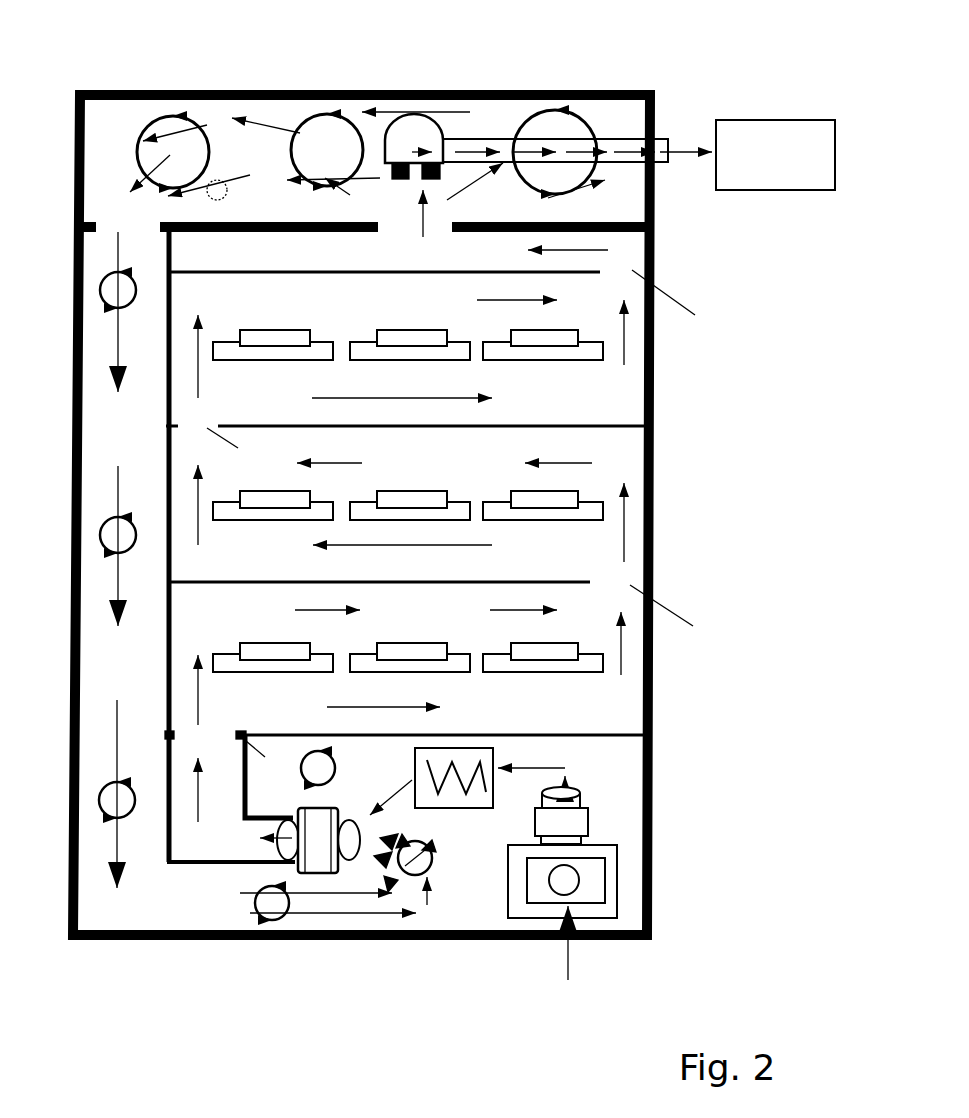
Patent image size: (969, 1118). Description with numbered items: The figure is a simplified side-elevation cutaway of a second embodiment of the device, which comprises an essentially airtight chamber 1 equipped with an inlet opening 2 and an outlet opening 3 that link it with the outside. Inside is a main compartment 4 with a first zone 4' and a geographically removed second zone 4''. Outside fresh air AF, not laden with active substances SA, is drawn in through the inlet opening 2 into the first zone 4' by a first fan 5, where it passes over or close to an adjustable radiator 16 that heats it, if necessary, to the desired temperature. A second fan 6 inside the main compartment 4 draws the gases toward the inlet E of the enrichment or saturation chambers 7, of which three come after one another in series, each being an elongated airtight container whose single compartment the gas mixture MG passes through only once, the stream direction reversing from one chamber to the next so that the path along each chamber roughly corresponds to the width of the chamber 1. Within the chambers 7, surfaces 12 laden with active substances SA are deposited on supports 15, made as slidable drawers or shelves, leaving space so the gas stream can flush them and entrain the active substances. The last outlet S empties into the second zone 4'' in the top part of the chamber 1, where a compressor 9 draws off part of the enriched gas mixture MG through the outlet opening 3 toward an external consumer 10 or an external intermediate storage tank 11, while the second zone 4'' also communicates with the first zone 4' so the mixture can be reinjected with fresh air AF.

The chamber 1 is at (163, 88).
The inlet opening 2 is at (580, 881).
The outlet opening 3 is at (673, 133).
The main compartment 4 is at (120, 560).
The first zone 4' is at (430, 869).
The second zone 4'' is at (367, 155).
The first fan 5 is at (592, 821).
The second fan 6 is at (318, 855).
The enrichment or saturation chamber 7 is at (630, 376).
The compressor 9 is at (420, 135).
The external consumer 10 is at (775, 155).
The external intermediate storage tank 11 is at (775, 155).
The surface laden with active substance 12 is at (414, 343).
The support 15 is at (355, 343).
The adjustable radiator 16 is at (440, 808).